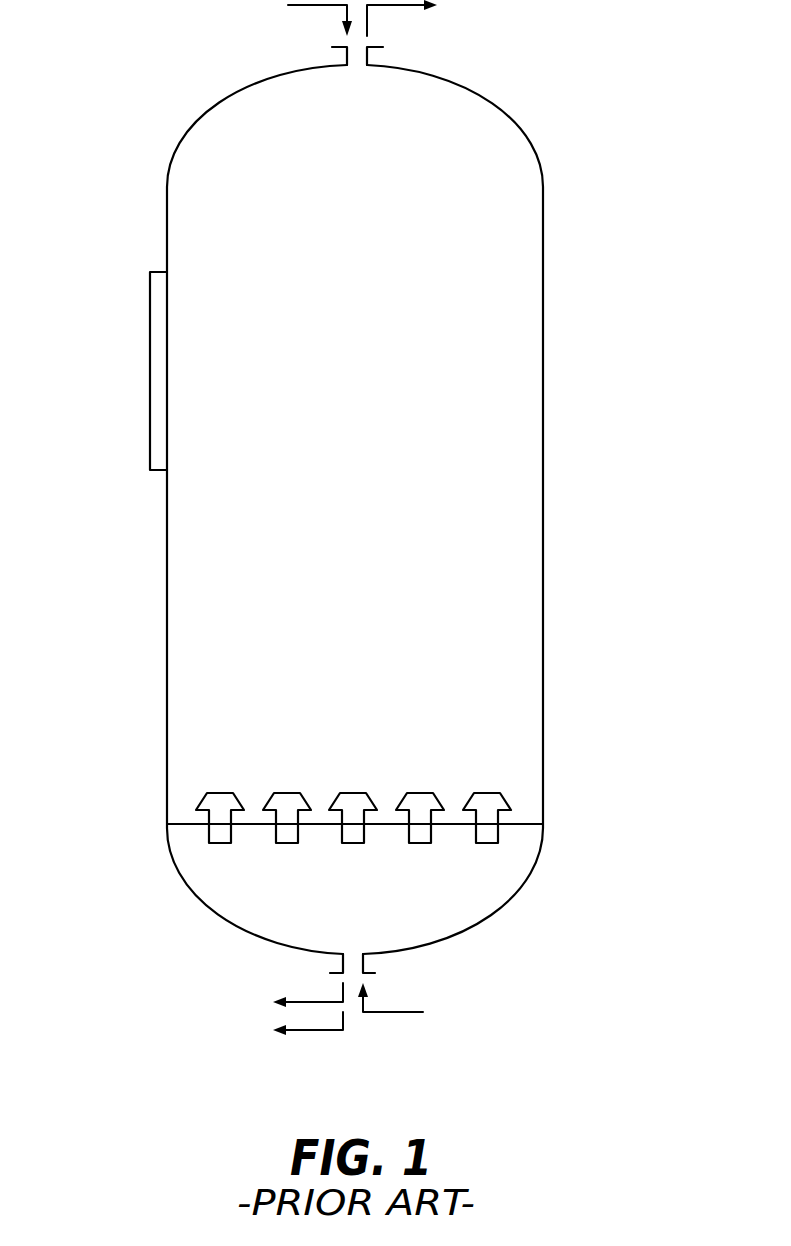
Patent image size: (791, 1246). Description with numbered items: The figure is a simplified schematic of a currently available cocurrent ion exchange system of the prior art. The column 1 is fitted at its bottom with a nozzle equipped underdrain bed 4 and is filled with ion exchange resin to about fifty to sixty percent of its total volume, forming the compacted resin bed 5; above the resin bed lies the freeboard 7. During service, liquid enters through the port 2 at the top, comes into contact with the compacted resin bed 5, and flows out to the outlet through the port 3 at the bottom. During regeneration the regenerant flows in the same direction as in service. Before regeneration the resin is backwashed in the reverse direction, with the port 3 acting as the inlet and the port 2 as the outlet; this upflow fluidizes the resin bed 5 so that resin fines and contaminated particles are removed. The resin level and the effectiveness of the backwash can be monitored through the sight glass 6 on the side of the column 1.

The column 1 is at (543, 436).
The port 2 is at (383, 47).
The port 3 is at (375, 967).
The nozzle equipped underdrain bed 4 is at (500, 798).
The resin bed 5 is at (371, 533).
The sight glass 6 is at (150, 377).
The freeboard 7 is at (371, 187).